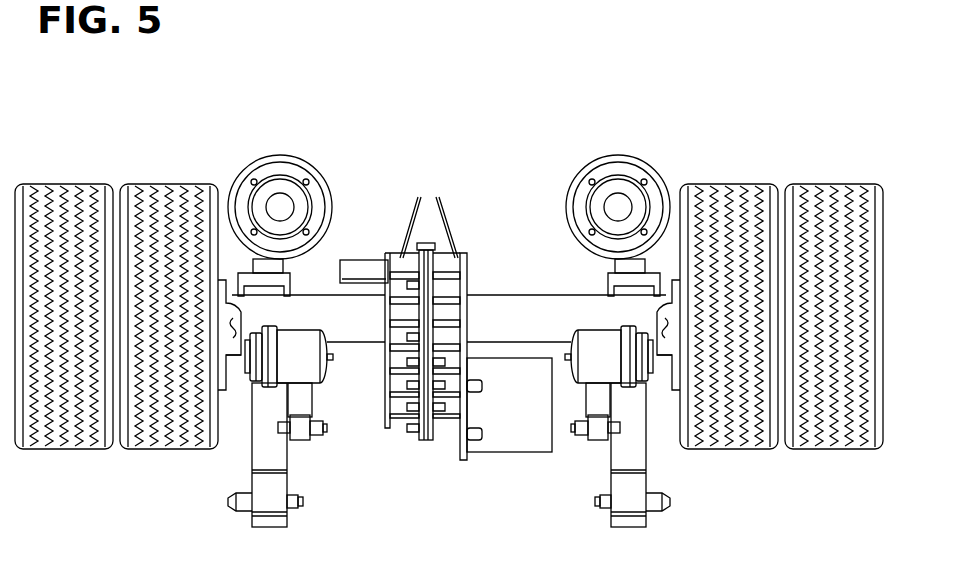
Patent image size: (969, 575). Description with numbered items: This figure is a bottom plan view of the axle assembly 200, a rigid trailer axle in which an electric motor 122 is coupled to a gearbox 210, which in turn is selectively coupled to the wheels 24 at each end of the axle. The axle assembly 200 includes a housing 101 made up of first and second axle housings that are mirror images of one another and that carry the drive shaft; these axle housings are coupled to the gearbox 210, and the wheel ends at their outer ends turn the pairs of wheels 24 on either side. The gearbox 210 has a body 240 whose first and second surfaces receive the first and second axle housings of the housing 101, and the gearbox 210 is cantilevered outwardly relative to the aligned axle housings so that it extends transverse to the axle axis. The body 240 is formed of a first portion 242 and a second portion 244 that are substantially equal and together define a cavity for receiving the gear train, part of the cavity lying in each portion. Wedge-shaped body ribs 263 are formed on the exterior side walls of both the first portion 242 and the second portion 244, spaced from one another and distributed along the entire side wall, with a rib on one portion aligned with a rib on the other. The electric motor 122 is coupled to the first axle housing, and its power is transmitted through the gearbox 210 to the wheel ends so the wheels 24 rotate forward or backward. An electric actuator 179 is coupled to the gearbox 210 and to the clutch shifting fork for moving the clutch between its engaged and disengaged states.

The wheels 24 is at (175, 440).
The axle assembly 200 is at (222, 166).
The first portion 242 is at (382, 297).
The housing 101 is at (363, 350).
The body 240 is at (390, 253).
The second portion 244 is at (470, 262).
The gearbox 210 is at (423, 447).
The body ribs 263 is at (429, 216).
The actuator 179 is at (358, 266).
The motor 122 is at (513, 461).